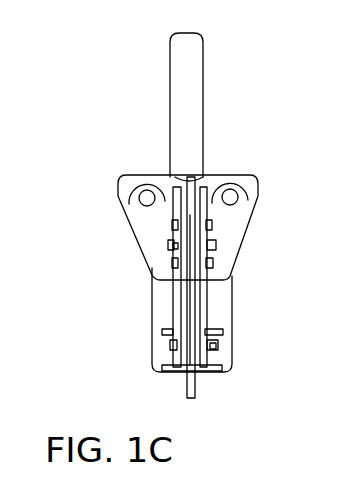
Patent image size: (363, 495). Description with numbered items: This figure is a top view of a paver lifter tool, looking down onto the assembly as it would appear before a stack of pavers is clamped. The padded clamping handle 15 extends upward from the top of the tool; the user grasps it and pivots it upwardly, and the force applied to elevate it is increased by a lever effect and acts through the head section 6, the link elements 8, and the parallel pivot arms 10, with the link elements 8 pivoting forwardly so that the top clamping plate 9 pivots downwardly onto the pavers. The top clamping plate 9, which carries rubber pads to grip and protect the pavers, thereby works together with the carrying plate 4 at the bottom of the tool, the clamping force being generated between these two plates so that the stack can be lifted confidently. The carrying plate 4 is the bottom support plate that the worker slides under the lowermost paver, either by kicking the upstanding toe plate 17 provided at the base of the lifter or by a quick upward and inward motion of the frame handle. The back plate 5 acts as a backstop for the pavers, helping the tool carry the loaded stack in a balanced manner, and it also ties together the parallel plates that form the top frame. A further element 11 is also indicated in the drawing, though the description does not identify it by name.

The clamping handle 15 is at (207, 76).
The top clamping plate 9 is at (250, 178).
The head section 6 is at (187, 207).
The parallel pivot arms 10 is at (205, 275).
The carrying plate 4 is at (228, 292).
The back plate 5 is at (163, 332).
The link elements 8 is at (193, 307).
The toe plate 17 is at (163, 368).
The nut 11 is at (213, 350).